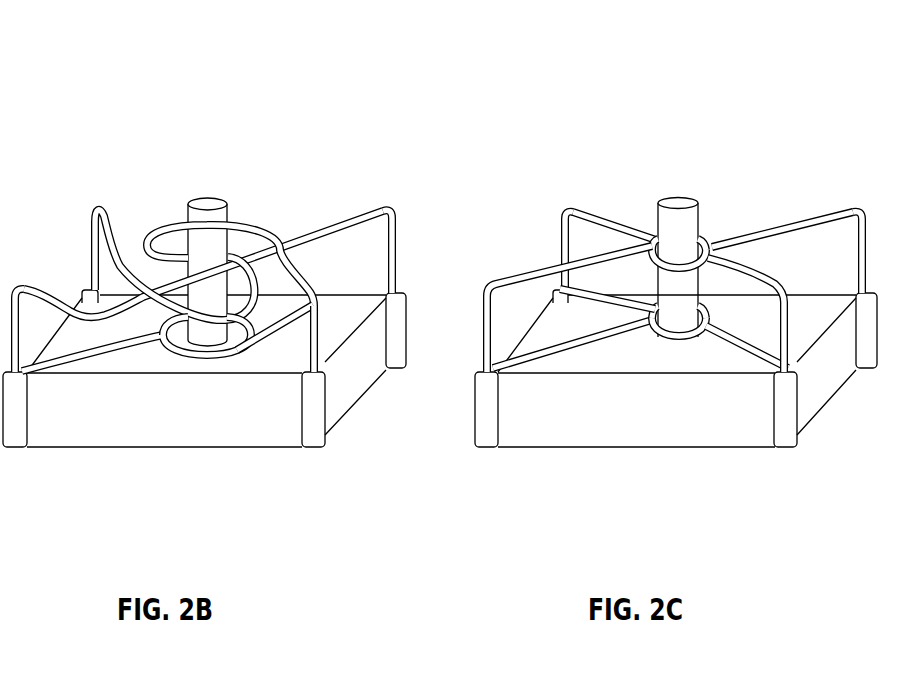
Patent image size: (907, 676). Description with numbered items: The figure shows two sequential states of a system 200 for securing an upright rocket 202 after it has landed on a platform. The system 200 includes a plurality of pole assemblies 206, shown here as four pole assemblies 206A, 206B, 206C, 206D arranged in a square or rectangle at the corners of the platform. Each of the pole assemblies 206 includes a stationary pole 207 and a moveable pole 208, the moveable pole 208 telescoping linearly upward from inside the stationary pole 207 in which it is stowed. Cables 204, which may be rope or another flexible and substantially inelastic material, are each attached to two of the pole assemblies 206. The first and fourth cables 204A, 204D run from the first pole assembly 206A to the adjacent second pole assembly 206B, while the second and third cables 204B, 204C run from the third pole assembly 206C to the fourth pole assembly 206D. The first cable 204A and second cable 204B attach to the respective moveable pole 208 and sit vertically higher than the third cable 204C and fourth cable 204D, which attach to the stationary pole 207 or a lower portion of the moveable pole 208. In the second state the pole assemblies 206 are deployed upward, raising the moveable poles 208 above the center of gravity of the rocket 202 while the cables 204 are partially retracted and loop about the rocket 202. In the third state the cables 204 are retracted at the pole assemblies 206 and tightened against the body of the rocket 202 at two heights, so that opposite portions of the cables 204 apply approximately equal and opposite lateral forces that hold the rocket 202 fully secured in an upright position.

In FIG. 2B, the system for securing an upright rocket 200 is at (87, 68).
In FIG. 2C, the system for securing an upright rocket 200 is at (557, 68).
In FIG. 2B, the rocket 202 is at (209, 202).
In FIG. 2C, the rocket 202 is at (680, 199).
In FIG. 2B, the cables 204 is at (202, 307).
In FIG. 2B, the first cable 204A is at (347, 221).
In FIG. 2C, the first cable 204A is at (803, 222).
In FIG. 2B, the second cable 204B is at (100, 204).
In FIG. 2C, the second cable 204B is at (602, 214).
In FIG. 2B, the third cable 204C is at (84, 362).
In FIG. 2C, the third cable 204C is at (538, 358).
In FIG. 2B, the fourth cable 204D is at (272, 352).
In FIG. 2C, the fourth cable 204D is at (742, 358).
In FIG. 2B, the pole assemblies 206 is at (34, 419).
In FIG. 2C, the first pole assembly 206A is at (861, 203).
In FIG. 2C, the second pole assembly 206B is at (787, 453).
In FIG. 2C, the third pole assembly 206C is at (482, 453).
In FIG. 2C, the fourth pole assembly 206D is at (566, 205).
In FIG. 2B, the stationary pole 207 is at (13, 447).
In FIG. 2C, the stationary pole 207 is at (493, 445).
In FIG. 2B, the moveable pole 208 is at (90, 246).
In FIG. 2C, the moveable pole 208 is at (866, 238).